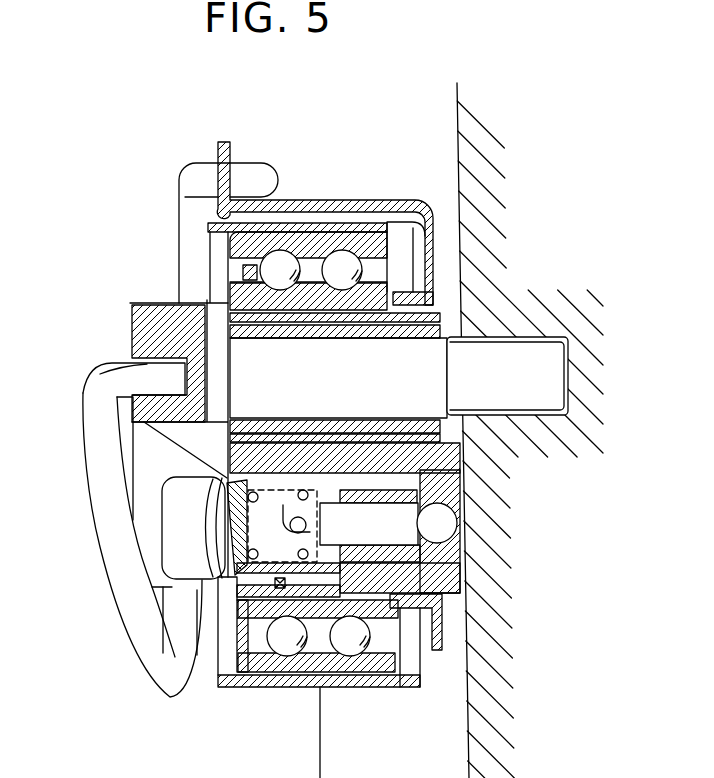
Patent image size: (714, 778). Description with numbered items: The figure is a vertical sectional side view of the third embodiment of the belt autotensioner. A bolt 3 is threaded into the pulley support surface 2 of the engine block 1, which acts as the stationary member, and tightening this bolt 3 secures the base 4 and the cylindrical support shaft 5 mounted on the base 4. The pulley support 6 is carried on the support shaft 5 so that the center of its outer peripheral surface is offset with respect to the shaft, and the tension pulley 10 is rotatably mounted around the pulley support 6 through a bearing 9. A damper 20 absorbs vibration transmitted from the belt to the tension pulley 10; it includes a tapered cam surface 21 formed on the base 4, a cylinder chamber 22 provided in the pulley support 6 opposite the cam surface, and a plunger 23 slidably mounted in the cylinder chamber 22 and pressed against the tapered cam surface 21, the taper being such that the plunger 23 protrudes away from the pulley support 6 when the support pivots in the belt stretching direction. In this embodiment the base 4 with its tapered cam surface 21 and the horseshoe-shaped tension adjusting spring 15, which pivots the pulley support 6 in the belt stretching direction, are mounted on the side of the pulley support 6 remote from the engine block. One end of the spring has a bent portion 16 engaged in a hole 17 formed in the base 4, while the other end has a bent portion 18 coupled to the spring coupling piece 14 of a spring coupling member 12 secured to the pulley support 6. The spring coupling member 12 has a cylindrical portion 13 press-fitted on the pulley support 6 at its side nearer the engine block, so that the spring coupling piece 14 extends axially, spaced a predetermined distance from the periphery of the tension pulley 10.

The engine block 1 is at (484, 76).
The pulley support surface 2 is at (457, 95).
The bolt 3 is at (413, 370).
The base 4 is at (155, 323).
The support shaft 5 is at (262, 333).
The pulley support 6 is at (440, 455).
The bearing 9 is at (318, 253).
The tension pulley 10 is at (287, 688).
The spring coupling member 12 is at (430, 211).
The cylindrical portion 13 is at (402, 303).
The spring coupling piece 14 is at (322, 205).
The tension adjusting spring 15 is at (97, 423).
The bent portion 16 is at (143, 382).
The hole 17 is at (105, 375).
The bent portion 18 is at (253, 173).
The damper 20 is at (236, 578).
The tapered cam surface 21 is at (160, 457).
The cylinder chamber 22 is at (375, 567).
The plunger 23 is at (342, 482).